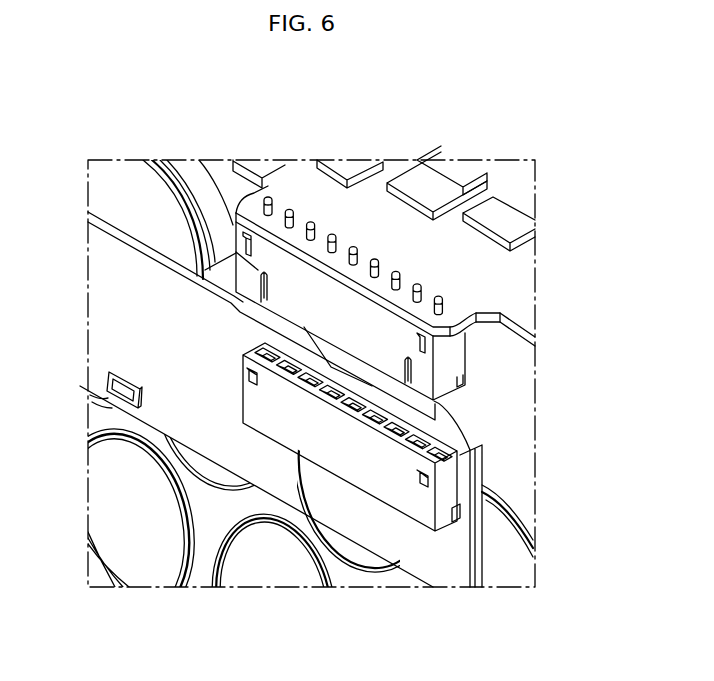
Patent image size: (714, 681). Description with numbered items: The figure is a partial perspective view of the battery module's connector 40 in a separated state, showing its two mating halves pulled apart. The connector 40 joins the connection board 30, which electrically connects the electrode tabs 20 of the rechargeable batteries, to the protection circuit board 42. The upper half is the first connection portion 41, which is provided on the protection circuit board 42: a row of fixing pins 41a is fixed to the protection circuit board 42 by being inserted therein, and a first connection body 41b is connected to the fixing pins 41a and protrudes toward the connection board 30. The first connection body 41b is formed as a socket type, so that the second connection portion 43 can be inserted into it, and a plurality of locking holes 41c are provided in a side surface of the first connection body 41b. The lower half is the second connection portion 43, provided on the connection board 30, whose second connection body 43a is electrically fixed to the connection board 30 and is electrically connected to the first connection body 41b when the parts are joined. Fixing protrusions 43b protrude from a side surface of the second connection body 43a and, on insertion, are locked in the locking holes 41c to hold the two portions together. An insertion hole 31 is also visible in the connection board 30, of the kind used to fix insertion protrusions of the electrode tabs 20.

The electrode tabs 20 is at (153, 568).
The connection board 30 is at (100, 322).
The insertion hole 31 is at (113, 383).
The connector 40 is at (322, 376).
The first connection portion 41 is at (311, 282).
The fixing pin 41a is at (441, 300).
The first connection body 41b is at (247, 273).
The locking hole 41c is at (238, 229).
The protection circuit board 42 is at (525, 275).
The second connection portion 43 is at (306, 489).
The second connection body 43a is at (358, 478).
The fixing protrusions 43b is at (248, 384).